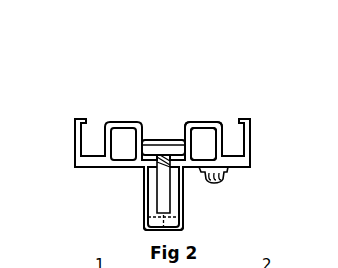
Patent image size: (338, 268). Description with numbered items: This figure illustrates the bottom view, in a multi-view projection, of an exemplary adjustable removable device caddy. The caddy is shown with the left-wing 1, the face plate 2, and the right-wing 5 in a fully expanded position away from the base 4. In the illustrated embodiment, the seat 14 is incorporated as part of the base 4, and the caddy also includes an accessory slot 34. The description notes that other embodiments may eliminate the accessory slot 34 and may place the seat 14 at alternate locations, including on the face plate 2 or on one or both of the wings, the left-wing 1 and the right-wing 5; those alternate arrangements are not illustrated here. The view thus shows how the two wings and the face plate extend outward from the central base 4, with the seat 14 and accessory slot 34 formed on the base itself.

The left-wing 1 is at (85, 119).
The face plate 2 is at (167, 138).
The base 4 is at (187, 198).
The right-wing 5 is at (254, 121).
The seat 14 is at (212, 118).
The accessory slot 34 is at (150, 193).